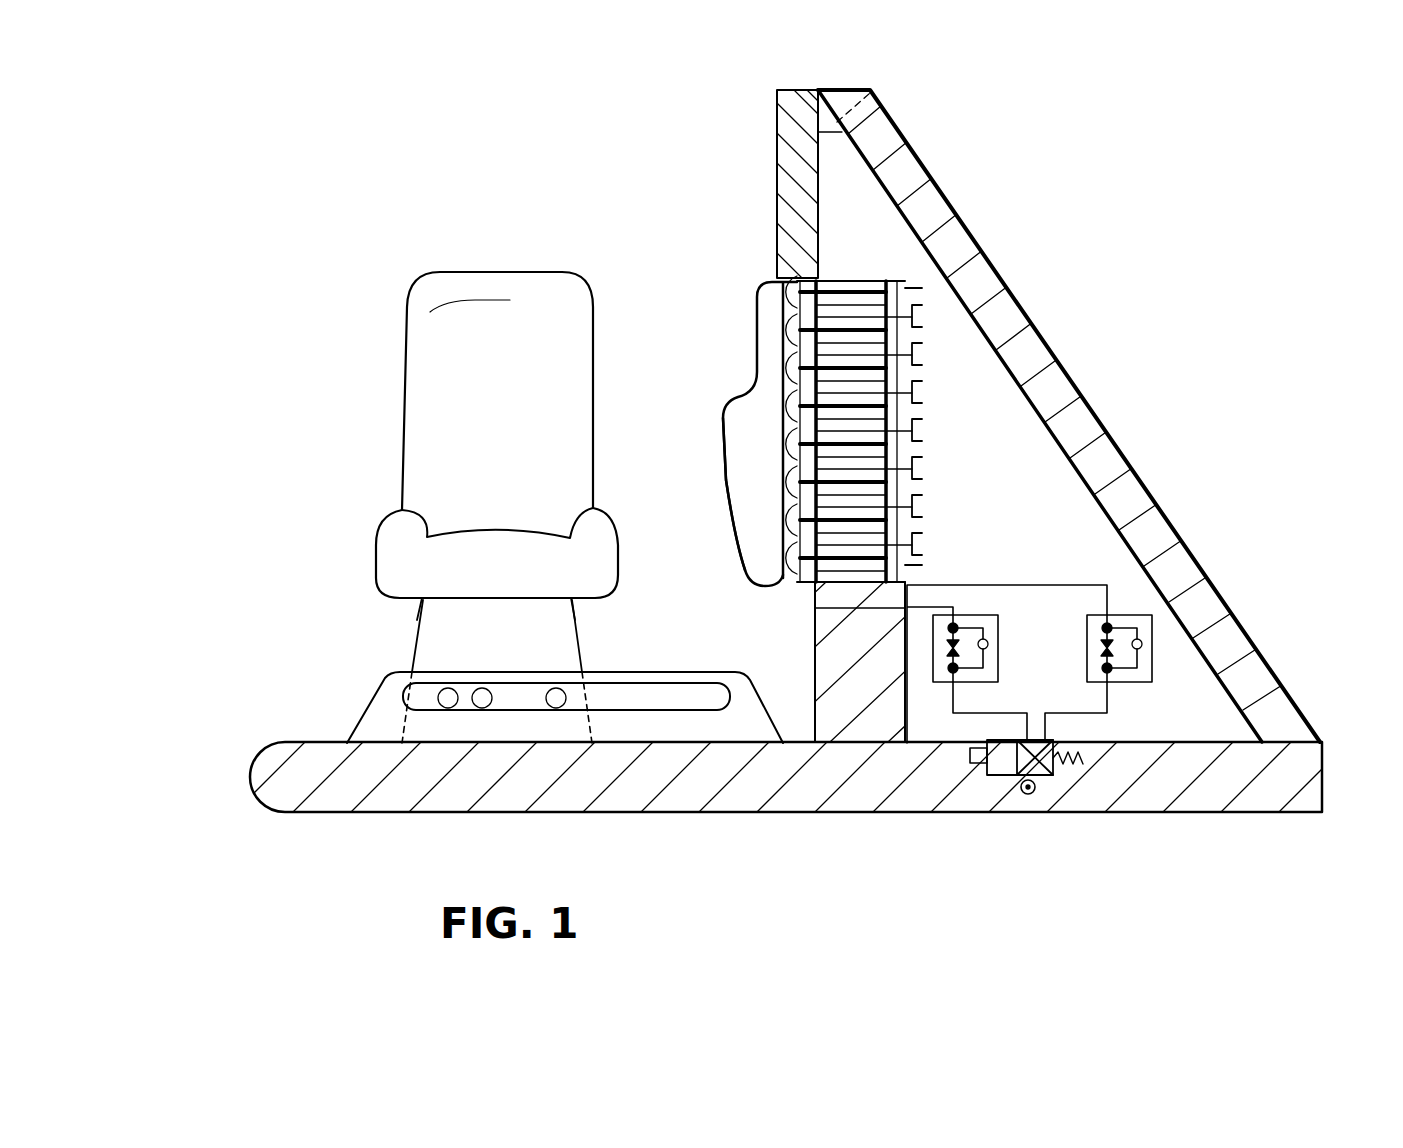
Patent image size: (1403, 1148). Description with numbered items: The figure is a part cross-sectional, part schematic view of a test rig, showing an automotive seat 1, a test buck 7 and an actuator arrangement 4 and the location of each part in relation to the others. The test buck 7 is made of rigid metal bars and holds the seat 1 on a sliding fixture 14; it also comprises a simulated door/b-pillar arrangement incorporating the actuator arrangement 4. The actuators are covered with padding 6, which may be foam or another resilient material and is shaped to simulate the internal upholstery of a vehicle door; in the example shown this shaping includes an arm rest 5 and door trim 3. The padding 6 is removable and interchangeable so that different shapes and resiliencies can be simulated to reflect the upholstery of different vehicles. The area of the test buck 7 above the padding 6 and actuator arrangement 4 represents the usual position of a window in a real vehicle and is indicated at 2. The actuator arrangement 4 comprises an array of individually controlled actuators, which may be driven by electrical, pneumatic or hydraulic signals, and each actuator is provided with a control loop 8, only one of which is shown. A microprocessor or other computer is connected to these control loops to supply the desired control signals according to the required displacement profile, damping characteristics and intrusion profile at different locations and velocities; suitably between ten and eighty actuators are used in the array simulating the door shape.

The automotive seat 1 is at (420, 343).
The window position 2 is at (783, 160).
The door trim 3 is at (757, 350).
The actuator arrangement 4 is at (933, 320).
The arm rest 5 is at (735, 395).
The padding 6 is at (765, 308).
The test buck 7 is at (768, 792).
The control loop 8 is at (1122, 602).
The sliding fixture 14 is at (373, 692).